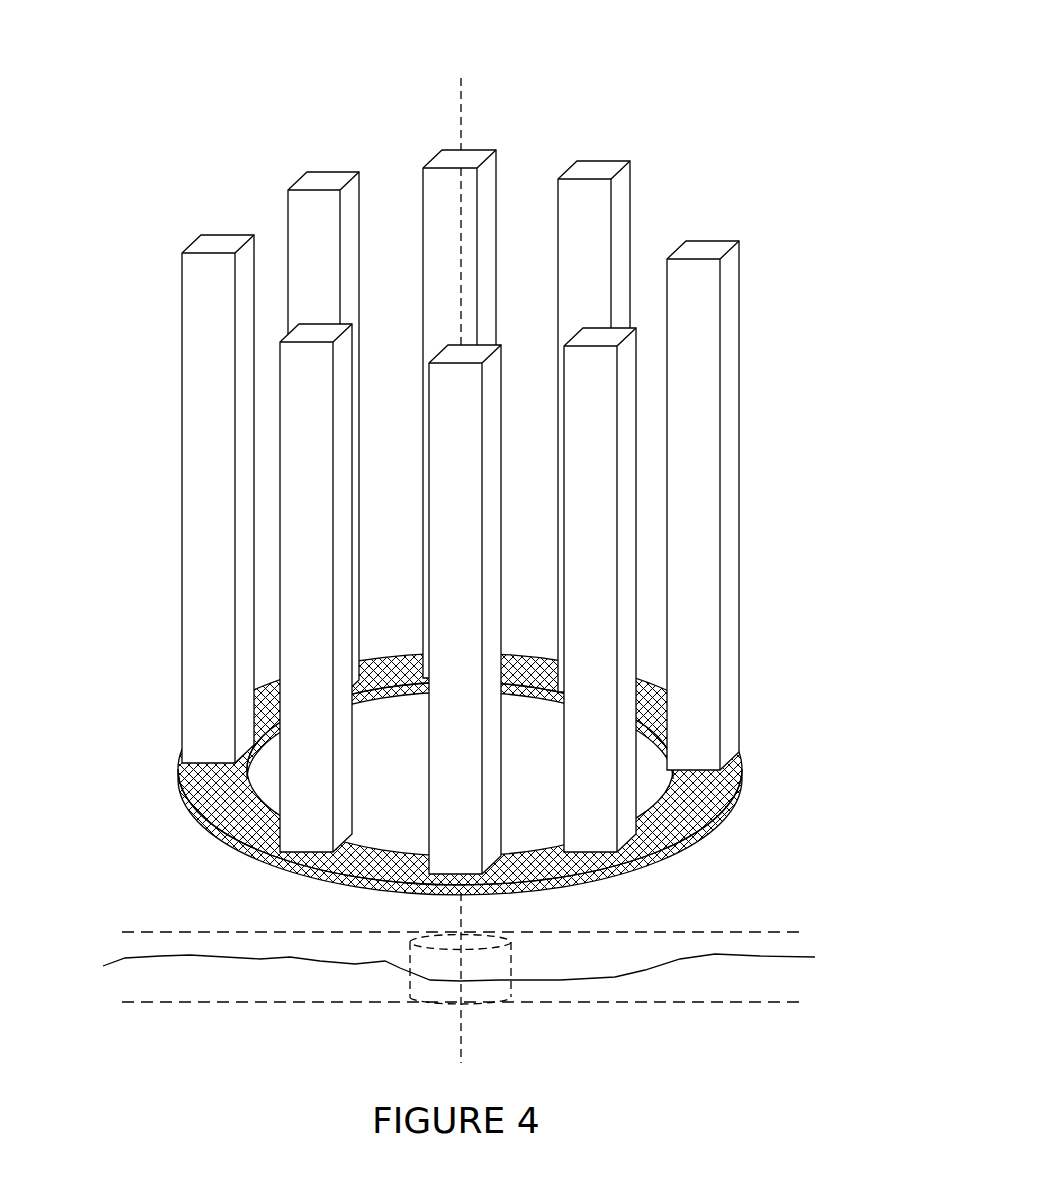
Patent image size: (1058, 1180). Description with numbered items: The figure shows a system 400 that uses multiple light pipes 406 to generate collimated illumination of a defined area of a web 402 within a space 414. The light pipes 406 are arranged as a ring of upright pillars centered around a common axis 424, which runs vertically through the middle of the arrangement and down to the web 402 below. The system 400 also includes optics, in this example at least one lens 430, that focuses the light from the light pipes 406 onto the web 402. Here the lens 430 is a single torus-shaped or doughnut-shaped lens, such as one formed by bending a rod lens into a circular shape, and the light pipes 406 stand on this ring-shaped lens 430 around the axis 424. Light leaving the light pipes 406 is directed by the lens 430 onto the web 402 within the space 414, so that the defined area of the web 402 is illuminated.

The system 400 is at (439, 539).
The web 402 is at (117, 945).
The light pipes 406 is at (202, 228).
The space 414 is at (439, 927).
The axis 424 is at (450, 120).
The lens 430 is at (213, 848).